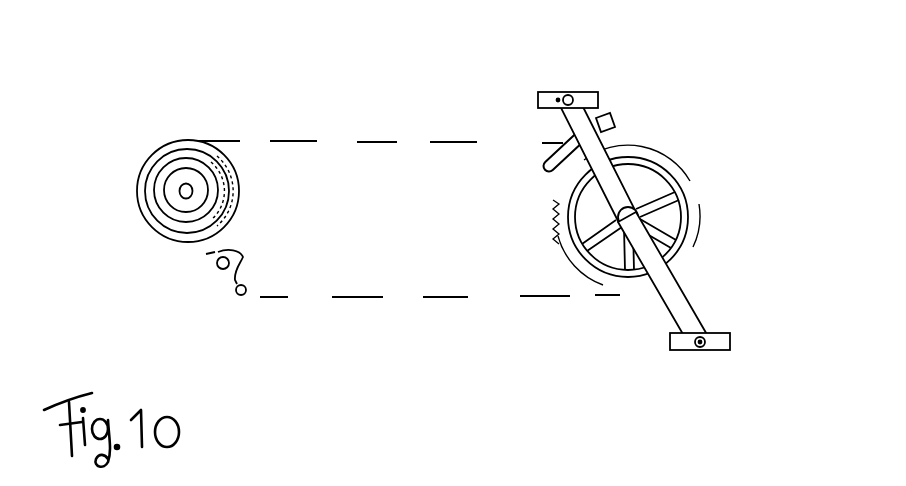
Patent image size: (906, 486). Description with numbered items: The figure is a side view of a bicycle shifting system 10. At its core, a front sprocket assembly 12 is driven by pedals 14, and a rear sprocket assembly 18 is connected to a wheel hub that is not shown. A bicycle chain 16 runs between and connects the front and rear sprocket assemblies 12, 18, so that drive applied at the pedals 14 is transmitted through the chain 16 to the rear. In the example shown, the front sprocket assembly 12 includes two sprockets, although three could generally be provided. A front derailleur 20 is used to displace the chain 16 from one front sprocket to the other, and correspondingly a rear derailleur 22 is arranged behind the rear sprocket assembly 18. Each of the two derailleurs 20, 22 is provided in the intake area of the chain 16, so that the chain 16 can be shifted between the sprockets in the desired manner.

The bicycle shifting system 10 is at (371, 100).
The front sprocket assembly 12 is at (662, 152).
The pedals 14 is at (688, 297).
The bicycle chain 16 is at (363, 298).
The rear sprocket assembly 18 is at (160, 152).
The front derailleur 20 is at (611, 118).
The rear derailleur 22 is at (236, 292).